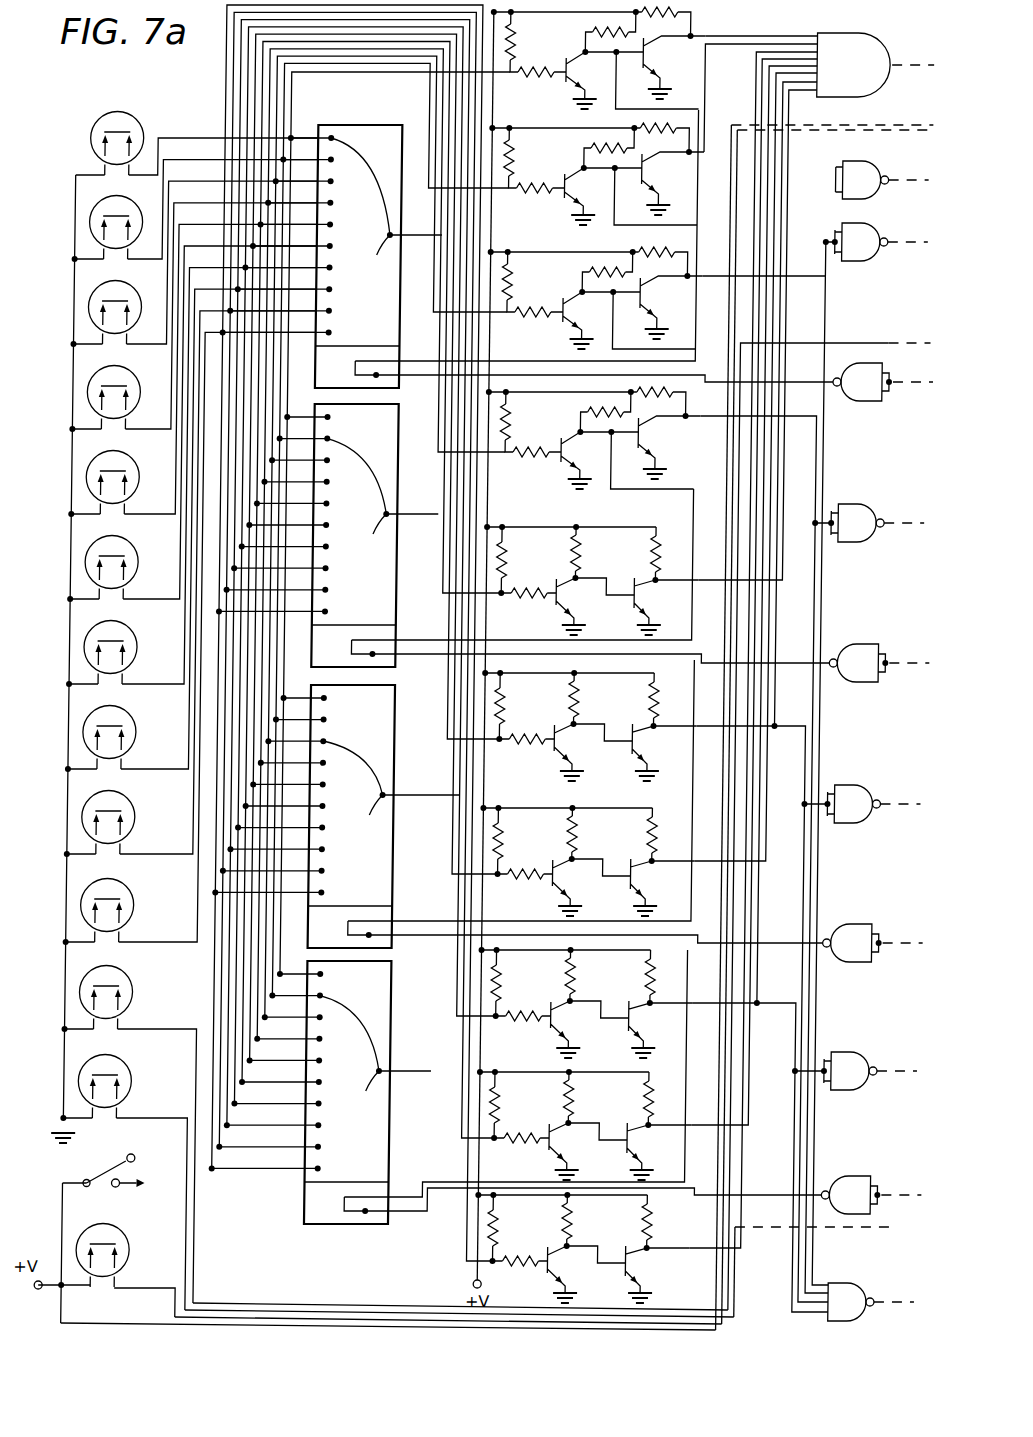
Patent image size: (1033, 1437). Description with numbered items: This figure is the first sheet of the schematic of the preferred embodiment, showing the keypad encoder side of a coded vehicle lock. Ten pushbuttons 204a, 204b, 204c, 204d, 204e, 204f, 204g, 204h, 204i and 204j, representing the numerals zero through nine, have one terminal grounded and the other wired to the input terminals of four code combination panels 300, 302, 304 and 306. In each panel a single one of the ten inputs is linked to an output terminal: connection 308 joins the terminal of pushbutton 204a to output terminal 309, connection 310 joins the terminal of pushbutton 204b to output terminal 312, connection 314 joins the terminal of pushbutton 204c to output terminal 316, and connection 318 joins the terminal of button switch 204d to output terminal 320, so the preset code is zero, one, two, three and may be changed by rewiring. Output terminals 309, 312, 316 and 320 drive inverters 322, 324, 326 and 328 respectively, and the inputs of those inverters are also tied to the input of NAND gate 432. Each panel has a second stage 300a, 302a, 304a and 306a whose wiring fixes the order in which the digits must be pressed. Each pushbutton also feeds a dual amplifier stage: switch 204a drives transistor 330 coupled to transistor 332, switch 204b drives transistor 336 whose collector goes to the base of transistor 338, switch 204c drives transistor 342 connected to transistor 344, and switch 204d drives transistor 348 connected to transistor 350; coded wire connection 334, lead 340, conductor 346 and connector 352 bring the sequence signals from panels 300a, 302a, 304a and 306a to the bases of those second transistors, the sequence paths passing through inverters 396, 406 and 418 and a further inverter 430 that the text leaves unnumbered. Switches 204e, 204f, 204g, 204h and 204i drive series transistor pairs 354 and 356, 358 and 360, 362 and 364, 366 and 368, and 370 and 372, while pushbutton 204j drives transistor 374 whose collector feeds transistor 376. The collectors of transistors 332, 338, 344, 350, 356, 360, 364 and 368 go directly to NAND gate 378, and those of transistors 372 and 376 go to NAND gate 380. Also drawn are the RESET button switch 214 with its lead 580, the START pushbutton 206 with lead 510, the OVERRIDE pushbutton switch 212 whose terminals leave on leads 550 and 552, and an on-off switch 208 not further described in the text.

The pushbutton 204a is at (134, 116).
The pushbutton 204b is at (134, 202).
The pushbutton 204c is at (130, 295).
The button switch 204d is at (134, 378).
The button switch 204e is at (135, 463).
The button switch 204f is at (135, 548).
The button switch 204g is at (145, 623).
The pushbutton switch 204h is at (140, 718).
The button switch 204i is at (140, 803).
The pushbutton 204j is at (140, 891).
The RESET button switch 214 is at (138, 985).
The START pushbutton 206 is at (138, 1073).
The on-off power switch 208 is at (100, 1180).
The OVERRIDE pushbutton switch 212 is at (141, 1232).
The code combination panel 300 is at (392, 161).
The connection 308 is at (380, 190).
The output terminal 309 is at (395, 252).
The second stage 300a is at (357, 362).
The code combination panel 302 is at (392, 441).
The connection 310 is at (380, 478).
The output terminal 312 is at (391, 535).
The secondary combination panel 302a is at (359, 643).
The code combination panel 304 is at (395, 721).
The connection 314 is at (369, 772).
The output terminal 316 is at (402, 814).
The secondary combination panel 304a is at (359, 920).
The code combination panel 306 is at (393, 1000).
The connection 318 is at (382, 1035).
The output terminal 320 is at (386, 1089).
The secondary combination panel 306a is at (357, 1200).
The transistor 330 is at (566, 72).
The transistor 332 is at (652, 48).
The coded wire connection 334 is at (520, 357).
The transistor 336 is at (565, 187).
The transistor 338 is at (652, 166).
The lead 340 is at (526, 634).
The transistor 342 is at (566, 311).
The transistor 344 is at (650, 290).
The conductor 346 is at (516, 917).
The transistor 348 is at (566, 451).
The transistor 350 is at (650, 428).
The connector 352 is at (540, 1182).
The transistor 354 is at (562, 582).
The transistor 356 is at (650, 592).
The transistor 358 is at (560, 728).
The transistor 360 is at (650, 736).
The transistor 362 is at (560, 863).
The transistor 364 is at (650, 872).
The transistor 366 is at (560, 1006).
The transistor 368 is at (650, 1017).
The transistor 370 is at (558, 1128).
The transistor 372 is at (652, 1137).
The transistor 374 is at (556, 1250).
The transistor 376 is at (658, 1258).
The NAND gate 378 is at (871, 75).
The NAND gate 380 is at (871, 170).
The inverter 322 is at (873, 232).
The lead 580 is at (853, 343).
The inverter 396 is at (860, 401).
The inverter 324 is at (860, 510).
The inverter 406 is at (860, 648).
The inverter 326 is at (863, 790).
The inverter 418 is at (856, 930).
The inverter 328 is at (862, 1055).
The inverting gate 430 is at (870, 1183).
The NAND gate 432 is at (868, 1288).
The lead 510 is at (242, 1305).
The lead 550 is at (748, 1318).
The lead 552 is at (738, 1332).